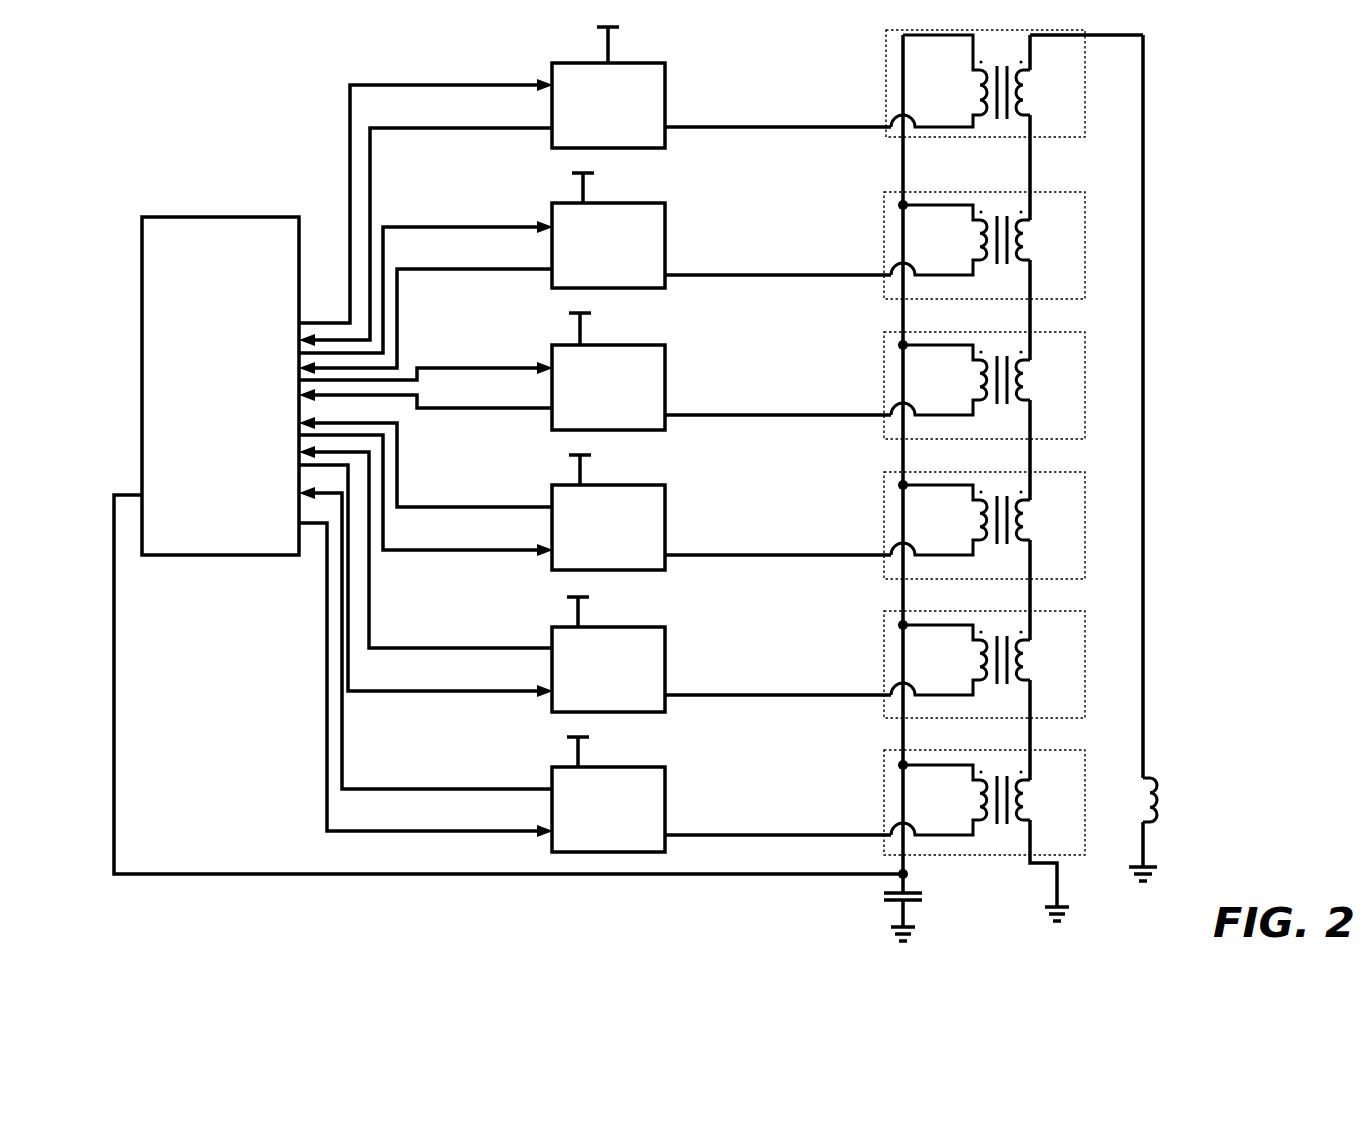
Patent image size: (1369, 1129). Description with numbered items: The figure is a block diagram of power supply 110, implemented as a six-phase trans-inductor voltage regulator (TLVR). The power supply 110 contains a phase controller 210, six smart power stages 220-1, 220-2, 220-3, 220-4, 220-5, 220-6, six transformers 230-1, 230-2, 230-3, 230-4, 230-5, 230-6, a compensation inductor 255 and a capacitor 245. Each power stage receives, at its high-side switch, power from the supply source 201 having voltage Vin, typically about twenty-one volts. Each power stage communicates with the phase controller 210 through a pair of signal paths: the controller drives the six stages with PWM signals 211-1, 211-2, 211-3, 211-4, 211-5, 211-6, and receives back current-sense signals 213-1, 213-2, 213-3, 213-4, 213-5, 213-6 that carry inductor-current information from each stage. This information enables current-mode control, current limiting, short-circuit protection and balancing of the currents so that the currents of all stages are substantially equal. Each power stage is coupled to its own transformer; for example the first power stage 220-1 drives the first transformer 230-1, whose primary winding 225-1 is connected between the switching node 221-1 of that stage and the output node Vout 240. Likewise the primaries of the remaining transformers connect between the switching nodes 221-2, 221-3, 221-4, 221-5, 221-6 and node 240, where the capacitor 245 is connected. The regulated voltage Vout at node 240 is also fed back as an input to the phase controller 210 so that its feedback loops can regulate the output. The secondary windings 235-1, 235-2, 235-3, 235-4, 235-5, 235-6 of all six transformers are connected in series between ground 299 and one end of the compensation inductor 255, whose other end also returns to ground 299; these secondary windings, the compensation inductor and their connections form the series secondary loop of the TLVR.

The power supply 110 is at (296, 146).
The phase controller 210 is at (240, 426).
The supply source 201 is at (610, 45).
The smart power stage SPS-1 220-1 is at (638, 131).
The smart power stage SPS-2 220-2 is at (638, 271).
The smart power stage SPS-3 220-3 is at (638, 413).
The smart power stage SPS-4 220-4 is at (638, 553).
The smart power stage SPS-5 220-5 is at (638, 695).
The smart power stage SPS-6 220-6 is at (638, 835).
The signal PWM-1 211-1 is at (490, 84).
The signal PWM-2 211-2 is at (490, 226).
The signal PWM-3 211-3 is at (490, 367).
The signal PWM-4 211-4 is at (485, 549).
The signal PWM-5 211-5 is at (477, 690).
The signal PWM-6 211-6 is at (472, 830).
The signal CS-1 213-1 is at (472, 127).
The signal CS-2 213-2 is at (488, 268).
The signal CS-3 213-3 is at (502, 407).
The signal CS-4 213-4 is at (488, 506).
The signal CS-5 213-5 is at (488, 647).
The signal CS-6 213-6 is at (474, 788).
The switching node SW-1 221-1 is at (787, 116).
The switching node SW-2 221-2 is at (807, 263).
The switching node SW-3 221-3 is at (807, 403).
The switching node SW-4 221-4 is at (807, 543).
The switching node SW-5 221-5 is at (807, 683).
The switching node SW-6 221-6 is at (807, 823).
The primary winding 225-1 is at (965, 97).
The secondary winding 235-1 is at (1064, 100).
The secondary winding 235-2 is at (1064, 245).
The secondary winding 235-3 is at (1062, 383).
The secondary winding 235-4 is at (1062, 523).
The secondary winding 235-5 is at (1062, 663).
The secondary winding 235-6 is at (1060, 812).
The transformer 230-1 is at (1078, 128).
The transformer 230-2 is at (1078, 288).
The transformer 230-3 is at (1078, 428).
The transformer 230-4 is at (1078, 568).
The transformer 230-5 is at (1078, 708).
The transformer 230-6 is at (1078, 845).
The node Vout 240 is at (832, 877).
The capacitor 245 is at (922, 896).
The ground 299 is at (910, 925).
The compensation inductor 255 is at (1160, 797).